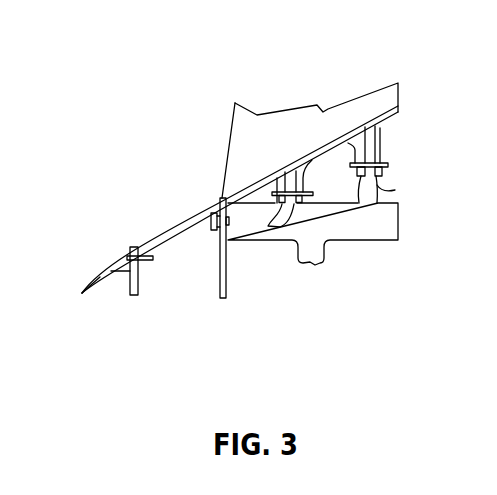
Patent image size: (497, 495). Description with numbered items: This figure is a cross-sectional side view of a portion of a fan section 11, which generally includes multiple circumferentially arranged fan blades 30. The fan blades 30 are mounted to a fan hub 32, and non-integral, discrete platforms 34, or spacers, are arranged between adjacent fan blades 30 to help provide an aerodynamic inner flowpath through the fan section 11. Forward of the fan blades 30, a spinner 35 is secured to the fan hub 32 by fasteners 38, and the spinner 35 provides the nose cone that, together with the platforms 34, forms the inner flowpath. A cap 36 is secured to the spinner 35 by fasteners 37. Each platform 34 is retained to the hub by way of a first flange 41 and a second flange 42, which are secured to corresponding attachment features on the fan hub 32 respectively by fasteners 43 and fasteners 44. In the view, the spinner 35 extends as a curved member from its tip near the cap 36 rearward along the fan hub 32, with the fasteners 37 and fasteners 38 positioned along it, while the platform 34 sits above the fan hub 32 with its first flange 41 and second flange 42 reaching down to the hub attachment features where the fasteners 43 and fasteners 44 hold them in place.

The fan section 11 is at (188, 100).
The fan blade 30 is at (333, 118).
The fan hub 32 is at (347, 232).
The platform 34 is at (293, 161).
The spinner 35 is at (172, 227).
The cap 36 is at (94, 273).
The fastener 37 is at (152, 262).
The fastener 38 is at (210, 231).
The first flange 41 is at (273, 226).
The second flange 42 is at (395, 190).
The fastener 43 is at (312, 190).
The fastener 44 is at (389, 163).